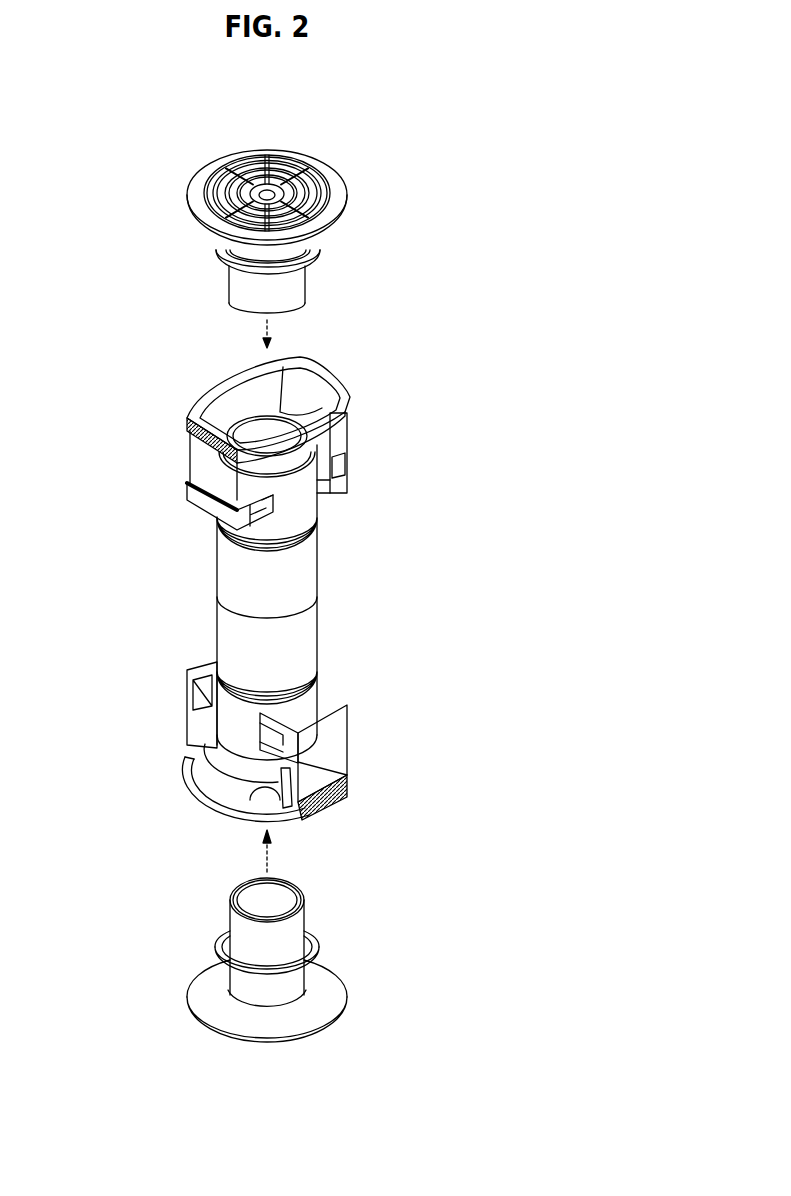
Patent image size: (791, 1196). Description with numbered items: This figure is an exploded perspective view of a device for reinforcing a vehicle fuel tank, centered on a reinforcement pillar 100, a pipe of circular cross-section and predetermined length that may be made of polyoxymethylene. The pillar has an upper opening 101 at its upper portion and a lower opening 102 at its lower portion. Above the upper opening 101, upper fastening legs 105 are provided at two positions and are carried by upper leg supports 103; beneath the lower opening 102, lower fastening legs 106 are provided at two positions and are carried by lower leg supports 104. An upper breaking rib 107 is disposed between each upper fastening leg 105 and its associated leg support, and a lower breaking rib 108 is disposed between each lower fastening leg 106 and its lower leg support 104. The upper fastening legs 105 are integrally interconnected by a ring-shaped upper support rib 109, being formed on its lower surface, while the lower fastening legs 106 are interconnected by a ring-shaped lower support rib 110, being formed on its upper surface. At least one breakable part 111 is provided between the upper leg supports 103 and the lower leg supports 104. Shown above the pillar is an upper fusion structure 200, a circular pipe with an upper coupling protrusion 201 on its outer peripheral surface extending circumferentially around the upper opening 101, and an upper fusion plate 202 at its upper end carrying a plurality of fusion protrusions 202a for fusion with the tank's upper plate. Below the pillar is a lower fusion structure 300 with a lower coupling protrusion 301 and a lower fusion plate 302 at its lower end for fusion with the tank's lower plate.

The reinforcement pillar 100 is at (307, 587).
The upper opening 101 is at (327, 487).
The lower opening 102 is at (217, 785).
The upper leg supports 103 is at (223, 487).
The lower leg supports 104 is at (333, 753).
The upper fastening legs 105 is at (312, 386).
The lower fastening legs 106 is at (267, 783).
The upper breaking rib 107 is at (237, 472).
The lower breaking rib 108 is at (193, 740).
The upper support rib 109 is at (220, 386).
The lower support rib 110 is at (193, 777).
The breakable part 111 is at (317, 672).
The upper fusion structure 200 is at (291, 215).
The upper coupling protrusion 201 is at (325, 276).
The upper fusion plate 202 is at (198, 213).
The fusion protrusions 202a is at (203, 172).
The lower fusion structure 300 is at (319, 936).
The lower coupling protrusion 301 is at (313, 940).
The lower fusion plate 302 is at (337, 985).